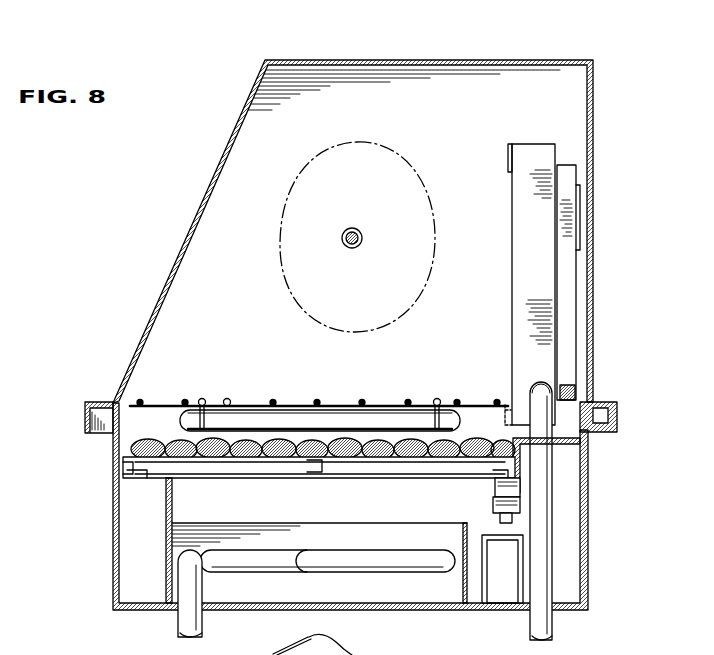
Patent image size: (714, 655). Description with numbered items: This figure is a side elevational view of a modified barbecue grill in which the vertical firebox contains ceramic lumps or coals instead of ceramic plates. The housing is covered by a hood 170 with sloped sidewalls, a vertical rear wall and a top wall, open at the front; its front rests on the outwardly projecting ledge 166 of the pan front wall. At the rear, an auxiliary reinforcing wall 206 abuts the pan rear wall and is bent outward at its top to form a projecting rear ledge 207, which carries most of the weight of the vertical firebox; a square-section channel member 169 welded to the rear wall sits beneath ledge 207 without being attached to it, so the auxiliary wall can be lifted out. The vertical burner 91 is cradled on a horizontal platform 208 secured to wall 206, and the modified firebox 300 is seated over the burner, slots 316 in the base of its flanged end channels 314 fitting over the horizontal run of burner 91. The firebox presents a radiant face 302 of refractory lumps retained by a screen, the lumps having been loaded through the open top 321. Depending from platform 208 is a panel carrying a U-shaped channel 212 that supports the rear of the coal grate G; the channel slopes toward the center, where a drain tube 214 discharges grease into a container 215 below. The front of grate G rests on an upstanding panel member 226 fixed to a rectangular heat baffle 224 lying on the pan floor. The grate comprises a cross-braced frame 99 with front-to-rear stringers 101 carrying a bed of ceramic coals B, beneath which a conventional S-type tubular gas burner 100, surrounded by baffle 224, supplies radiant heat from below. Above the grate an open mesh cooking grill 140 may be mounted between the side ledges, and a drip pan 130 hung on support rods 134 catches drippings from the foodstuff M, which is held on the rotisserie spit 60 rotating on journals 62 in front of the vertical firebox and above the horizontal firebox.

The hood 170 is at (456, 56).
The auxiliary reinforcing wall 206 is at (584, 545).
The projecting rear ledge 207 is at (600, 402).
The ledge 166 is at (103, 402).
The rectangular channel member 169 is at (90, 420).
The modified firebox 300 is at (538, 168).
The open top 321 is at (520, 142).
The flanged end channel 314 is at (520, 283).
The radiant face 302 is at (512, 207).
The vertical burner 91 is at (557, 516).
The slot 316 is at (546, 383).
The horizontal platform 208 is at (565, 445).
The drip pan 130 is at (337, 427).
The open mesh cooking grill 140 is at (227, 399).
The support rod 134 is at (202, 398).
The bed of ceramic coals B is at (128, 448).
The cross-braced frame 99 is at (318, 480).
The stringer 101 is at (248, 472).
The coal grate G is at (127, 476).
The upstanding panel member 226 is at (166, 515).
The heat baffle 224 is at (355, 538).
The tubular gas burner 100 is at (342, 570).
The U-shaped channel 212 is at (497, 488).
The drain tube 214 is at (495, 518).
The container 215 is at (503, 592).
The foodstuff M is at (286, 205).
The food holding spit 60 is at (352, 227).
The journal 62 is at (360, 247).